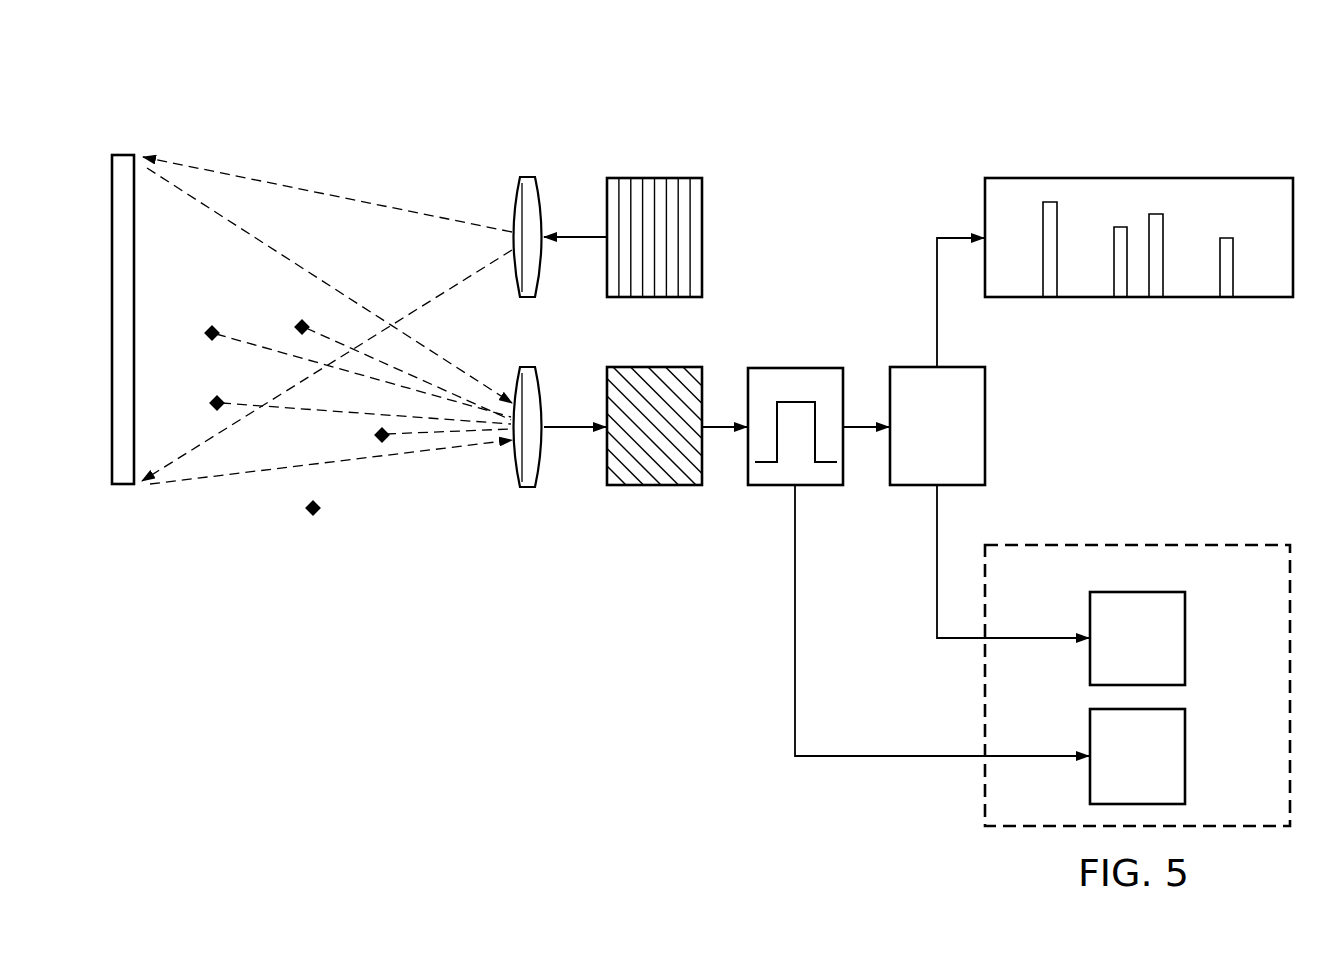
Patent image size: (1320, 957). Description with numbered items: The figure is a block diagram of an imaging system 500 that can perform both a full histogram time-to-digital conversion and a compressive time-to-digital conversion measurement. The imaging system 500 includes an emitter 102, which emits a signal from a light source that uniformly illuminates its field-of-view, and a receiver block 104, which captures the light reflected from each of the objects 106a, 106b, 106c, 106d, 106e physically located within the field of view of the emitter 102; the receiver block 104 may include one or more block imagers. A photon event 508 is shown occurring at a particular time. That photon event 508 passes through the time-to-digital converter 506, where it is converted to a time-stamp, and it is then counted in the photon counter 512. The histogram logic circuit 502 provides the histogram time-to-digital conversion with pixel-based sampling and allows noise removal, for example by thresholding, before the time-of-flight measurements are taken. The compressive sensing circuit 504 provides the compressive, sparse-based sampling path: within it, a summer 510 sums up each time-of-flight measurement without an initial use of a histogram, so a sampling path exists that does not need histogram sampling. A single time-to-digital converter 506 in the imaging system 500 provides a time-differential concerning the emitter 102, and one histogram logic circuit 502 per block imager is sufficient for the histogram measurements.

The imaging system 500 is at (345, 95).
The emitter 102 is at (647, 177).
The receiver block 104 is at (653, 488).
The object 106a is at (308, 510).
The object 106b is at (376, 441).
The object 106c is at (207, 332).
The object 106d is at (212, 403).
The object 106e is at (297, 325).
The histogram logic circuit 502 is at (1138, 178).
The compressive sensing circuit 504 is at (1137, 652).
The time-to-digital converter 506 is at (986, 415).
The photon event 508 is at (807, 368).
The summer 510 is at (1185, 648).
The photon counter 512 is at (1185, 770).